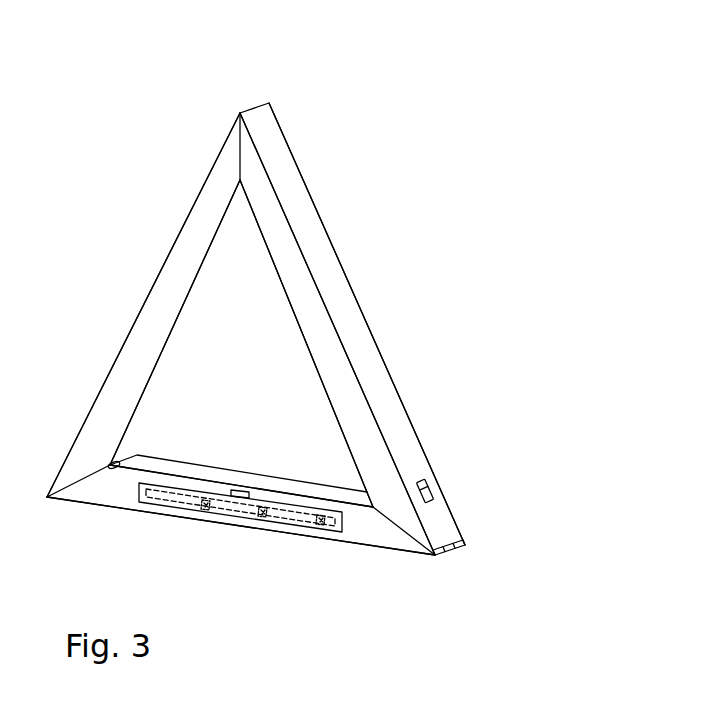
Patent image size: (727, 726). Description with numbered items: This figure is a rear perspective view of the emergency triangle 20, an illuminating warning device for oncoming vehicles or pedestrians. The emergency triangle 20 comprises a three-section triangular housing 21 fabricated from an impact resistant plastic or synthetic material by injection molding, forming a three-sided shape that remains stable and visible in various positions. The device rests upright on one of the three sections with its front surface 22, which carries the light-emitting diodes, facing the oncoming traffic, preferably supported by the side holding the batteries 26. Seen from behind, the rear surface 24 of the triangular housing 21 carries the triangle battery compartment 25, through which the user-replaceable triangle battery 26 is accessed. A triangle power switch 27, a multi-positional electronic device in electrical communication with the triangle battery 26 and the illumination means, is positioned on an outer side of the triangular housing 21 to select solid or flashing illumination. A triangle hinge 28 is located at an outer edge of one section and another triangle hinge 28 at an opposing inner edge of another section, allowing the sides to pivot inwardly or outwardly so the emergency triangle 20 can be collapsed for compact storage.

The emergency triangle 20 is at (407, 101).
The triangular housing 21 is at (321, 255).
The front surface 22 is at (241, 277).
The rear surface 24 is at (117, 398).
The triangle battery compartment 25 is at (140, 488).
The triangle battery 26 is at (245, 515).
The triangle power switch 27 is at (428, 479).
The triangle hinge 28 is at (451, 553).